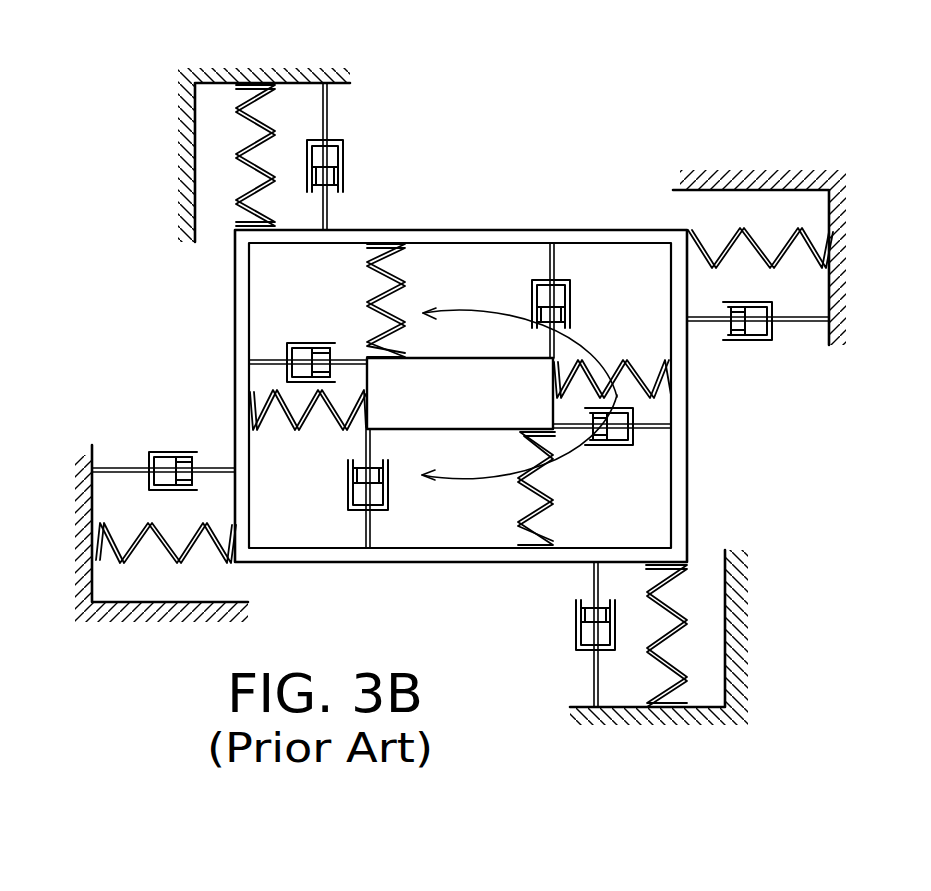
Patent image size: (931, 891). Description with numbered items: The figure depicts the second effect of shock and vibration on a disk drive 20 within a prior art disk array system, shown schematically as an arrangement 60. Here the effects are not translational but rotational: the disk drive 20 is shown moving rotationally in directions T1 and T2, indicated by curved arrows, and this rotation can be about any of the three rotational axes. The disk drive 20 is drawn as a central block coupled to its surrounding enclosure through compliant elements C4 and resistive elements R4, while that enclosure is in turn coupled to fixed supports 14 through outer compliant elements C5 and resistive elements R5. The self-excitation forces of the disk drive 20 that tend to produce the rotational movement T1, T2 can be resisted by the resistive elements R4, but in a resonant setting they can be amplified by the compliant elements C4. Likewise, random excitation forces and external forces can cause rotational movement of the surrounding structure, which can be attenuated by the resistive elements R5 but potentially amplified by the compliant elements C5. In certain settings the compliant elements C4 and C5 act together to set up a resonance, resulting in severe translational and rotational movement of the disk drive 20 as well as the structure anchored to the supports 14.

The vibration isolation system (prior art) 60 is at (690, 58).
The fixed support / ground 14 is at (183, 135).
The disk drive 20 is at (485, 425).
The compliant elements C5 is at (256, 190).
The resistive elements R5 is at (345, 176).
The compliant elements C4 is at (368, 286).
The resistive elements R4 is at (312, 343).
The rotational direction T1 is at (520, 352).
The rotational direction T2 is at (519, 454).